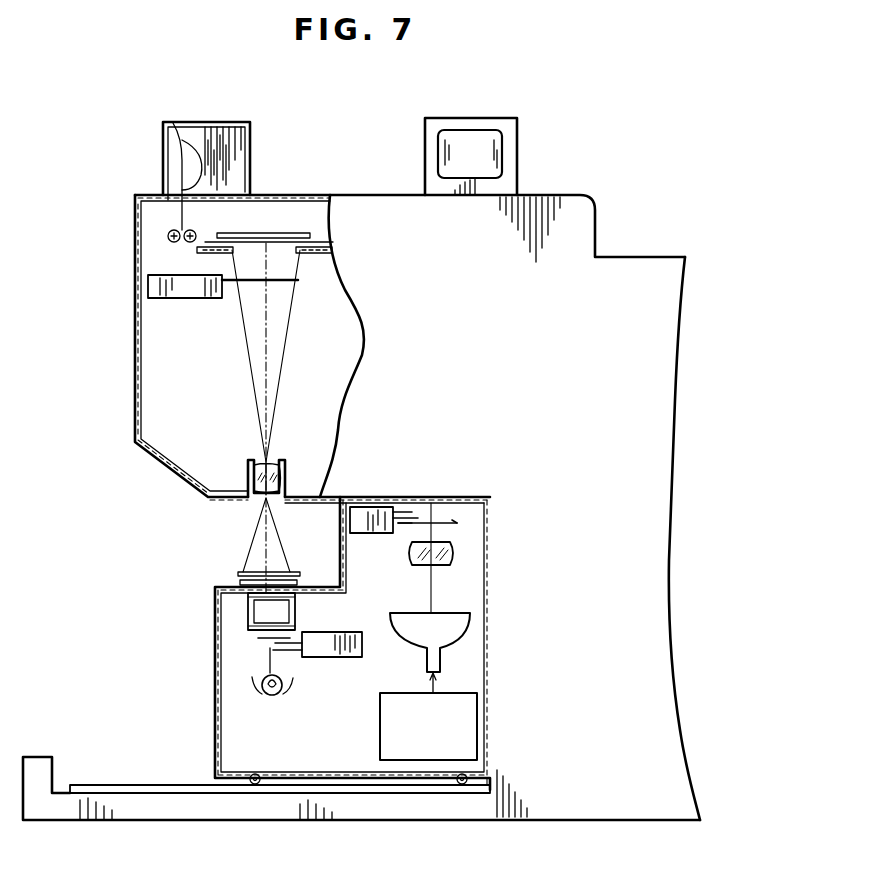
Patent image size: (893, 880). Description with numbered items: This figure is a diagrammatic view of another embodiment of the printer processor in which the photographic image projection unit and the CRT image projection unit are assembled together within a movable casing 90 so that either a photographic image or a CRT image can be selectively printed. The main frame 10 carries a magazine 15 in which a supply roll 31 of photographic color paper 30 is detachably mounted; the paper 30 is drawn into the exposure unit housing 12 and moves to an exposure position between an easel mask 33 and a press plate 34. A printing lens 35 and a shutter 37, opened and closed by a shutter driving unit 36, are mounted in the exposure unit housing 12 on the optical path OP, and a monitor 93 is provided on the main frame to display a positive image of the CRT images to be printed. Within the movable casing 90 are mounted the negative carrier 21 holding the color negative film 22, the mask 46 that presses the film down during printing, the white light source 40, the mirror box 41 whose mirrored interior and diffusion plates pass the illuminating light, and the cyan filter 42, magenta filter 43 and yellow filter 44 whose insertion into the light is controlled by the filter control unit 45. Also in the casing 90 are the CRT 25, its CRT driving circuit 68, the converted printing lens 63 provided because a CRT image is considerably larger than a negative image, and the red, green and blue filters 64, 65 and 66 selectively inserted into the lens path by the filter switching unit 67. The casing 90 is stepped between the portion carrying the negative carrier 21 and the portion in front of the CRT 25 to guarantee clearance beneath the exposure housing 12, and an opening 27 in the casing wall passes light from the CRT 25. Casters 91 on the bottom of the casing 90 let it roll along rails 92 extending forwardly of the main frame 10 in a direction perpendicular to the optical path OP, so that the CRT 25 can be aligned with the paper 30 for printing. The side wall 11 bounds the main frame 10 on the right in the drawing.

The main frame 10 is at (556, 190).
The housing side wall 11 is at (668, 605).
The exposure unit housing 12 is at (150, 386).
The magazine 15 is at (226, 122).
The negative carrier 21 is at (243, 586).
The color negative film 22 is at (295, 572).
The CRT 25 is at (410, 636).
The opening 27 is at (438, 497).
The photographic color paper 30 is at (184, 213).
The supply roll 31 is at (196, 162).
The easel mask 33 is at (205, 253).
The press plate 34 is at (300, 233).
The printing lens 35 is at (256, 462).
The shutter driving unit 36 is at (186, 300).
The shutter 37 is at (296, 284).
The white light source 40 is at (268, 696).
The mirror box 41 is at (248, 615).
The cyan filter 42 is at (287, 657).
The magenta filter 43 is at (292, 655).
The yellow filter 44 is at (260, 640).
The filter control unit 45 is at (350, 632).
The mask 46 is at (242, 580).
The printing lens 63 is at (440, 566).
The red filter 64 is at (455, 521).
The green filter 65 is at (406, 527).
The blue filter 66 is at (402, 512).
The filter switching unit 67 is at (362, 507).
The CRT driving circuit 68 is at (380, 724).
The movable casing 90 is at (215, 683).
The casters 91 is at (256, 785).
The rails 92 is at (165, 794).
The monitor 93 is at (470, 138).
The optical path OP is at (266, 384).